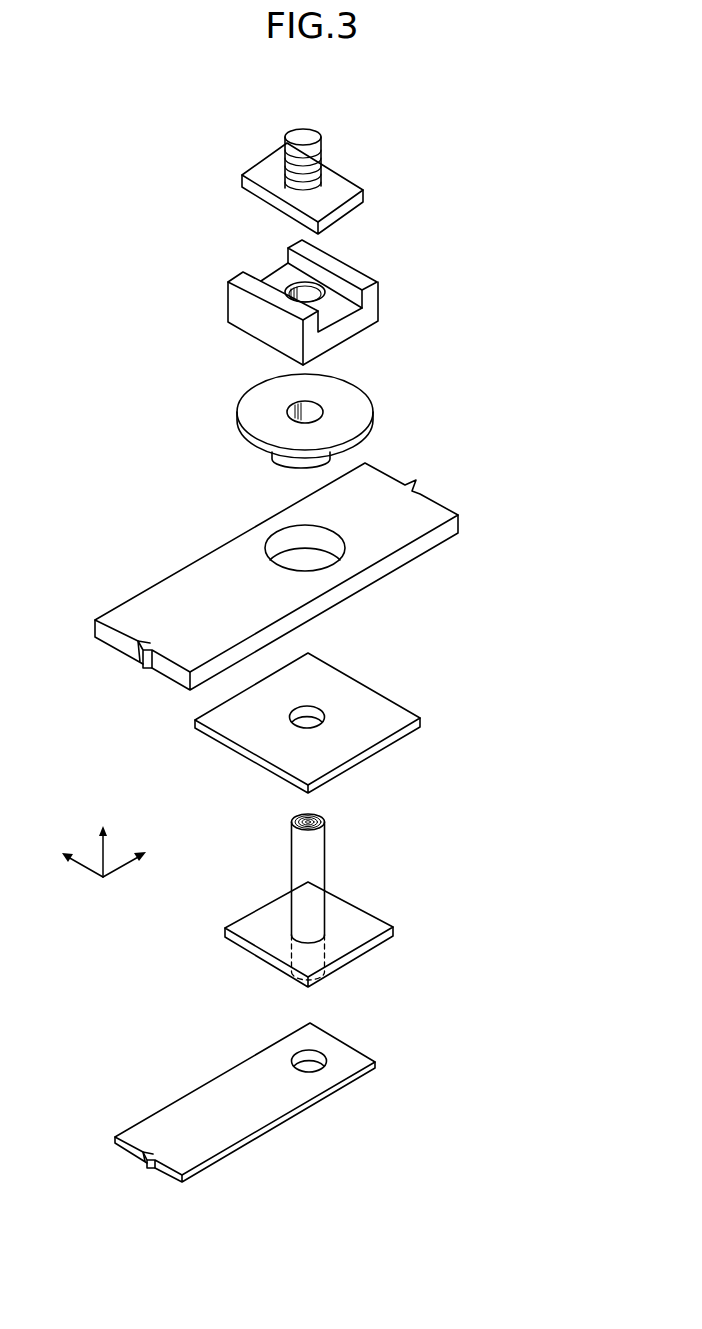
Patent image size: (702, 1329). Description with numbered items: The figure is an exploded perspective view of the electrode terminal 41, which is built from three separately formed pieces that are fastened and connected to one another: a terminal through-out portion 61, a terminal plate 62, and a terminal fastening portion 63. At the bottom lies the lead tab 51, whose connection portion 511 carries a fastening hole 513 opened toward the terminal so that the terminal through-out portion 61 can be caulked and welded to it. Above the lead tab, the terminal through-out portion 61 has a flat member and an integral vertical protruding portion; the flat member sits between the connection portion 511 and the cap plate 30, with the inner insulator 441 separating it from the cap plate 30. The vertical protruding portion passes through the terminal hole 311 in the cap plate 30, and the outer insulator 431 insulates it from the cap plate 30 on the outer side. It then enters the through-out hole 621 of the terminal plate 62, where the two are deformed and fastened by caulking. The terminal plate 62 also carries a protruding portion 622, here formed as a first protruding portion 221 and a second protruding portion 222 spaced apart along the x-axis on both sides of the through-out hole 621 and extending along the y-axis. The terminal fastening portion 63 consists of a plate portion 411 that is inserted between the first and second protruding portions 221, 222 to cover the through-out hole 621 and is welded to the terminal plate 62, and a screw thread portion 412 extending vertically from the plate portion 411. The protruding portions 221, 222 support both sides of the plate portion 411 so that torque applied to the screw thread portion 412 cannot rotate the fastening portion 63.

The electrode terminal 41 is at (295, 81).
The terminal fastening portion 63 is at (229, 176).
The plate portion 411 is at (338, 190).
The screw thread portion 412 is at (321, 150).
The terminal plate 62 is at (219, 300).
The through-out hole 621 is at (312, 302).
The protruding portion 622 is at (471, 226).
The first protruding portion 221 is at (267, 297).
The second protruding portion 222 is at (366, 284).
The outer insulator 431 is at (255, 413).
The cap plate 30 is at (398, 530).
The terminal hole 311 is at (282, 540).
The inner insulator 441 is at (390, 718).
The terminal through-out portion 61 is at (412, 923).
The lead tab 51 is at (176, 1072).
The connection portion 511 is at (265, 1110).
The fastening hole 513 is at (320, 1057).